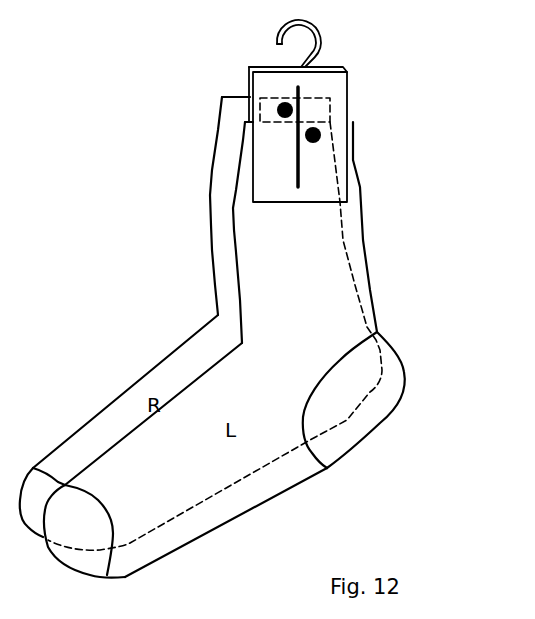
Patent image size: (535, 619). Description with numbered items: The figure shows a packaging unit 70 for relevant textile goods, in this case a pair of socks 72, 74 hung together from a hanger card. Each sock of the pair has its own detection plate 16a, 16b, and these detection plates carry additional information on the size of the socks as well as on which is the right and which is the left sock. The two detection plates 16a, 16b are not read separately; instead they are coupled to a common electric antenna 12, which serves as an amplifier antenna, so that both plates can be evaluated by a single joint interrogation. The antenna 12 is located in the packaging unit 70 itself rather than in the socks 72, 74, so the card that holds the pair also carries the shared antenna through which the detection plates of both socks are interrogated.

The common electric antenna 12 is at (302, 112).
The detection plate 16a is at (322, 135).
The detection plate 16b is at (276, 110).
The packaging unit 70 is at (345, 203).
The sock 72 is at (354, 422).
The sock 74 is at (228, 292).